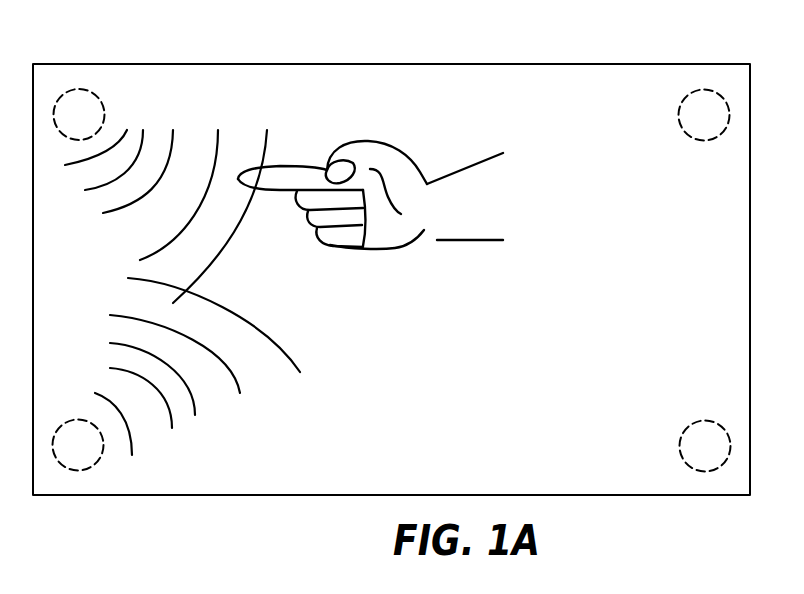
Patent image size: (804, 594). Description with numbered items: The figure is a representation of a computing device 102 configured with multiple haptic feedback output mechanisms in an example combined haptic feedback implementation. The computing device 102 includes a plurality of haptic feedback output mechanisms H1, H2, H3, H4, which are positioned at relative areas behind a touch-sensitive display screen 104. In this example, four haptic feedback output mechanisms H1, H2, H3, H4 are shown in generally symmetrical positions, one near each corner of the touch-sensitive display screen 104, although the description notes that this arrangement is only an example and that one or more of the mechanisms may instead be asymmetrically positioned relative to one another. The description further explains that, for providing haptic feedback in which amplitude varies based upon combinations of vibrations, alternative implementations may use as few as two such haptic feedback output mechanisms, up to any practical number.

The computing device 102 is at (199, 75).
The touch-sensitive display screen 104 is at (470, 352).
The haptic feedback output mechanism H1 is at (91, 124).
The haptic feedback output mechanism H2 is at (716, 124).
The haptic feedback output mechanism H3 is at (90, 454).
The haptic feedback output mechanism H4 is at (717, 456).